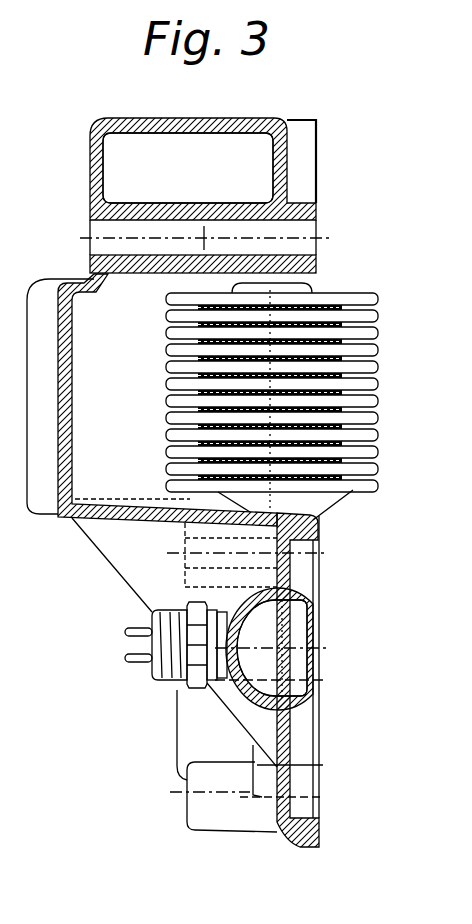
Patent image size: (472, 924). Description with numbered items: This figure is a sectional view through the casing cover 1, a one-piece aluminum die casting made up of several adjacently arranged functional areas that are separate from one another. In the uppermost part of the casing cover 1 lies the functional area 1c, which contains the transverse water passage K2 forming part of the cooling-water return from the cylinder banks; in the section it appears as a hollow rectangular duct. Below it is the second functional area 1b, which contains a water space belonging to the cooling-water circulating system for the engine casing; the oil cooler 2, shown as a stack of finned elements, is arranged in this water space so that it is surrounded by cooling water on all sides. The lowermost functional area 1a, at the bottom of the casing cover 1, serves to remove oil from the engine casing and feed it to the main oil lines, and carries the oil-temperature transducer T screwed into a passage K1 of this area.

The casing cover 1 is at (268, 118).
The lowermost functional area 1a is at (296, 622).
The second functional area 1b is at (145, 396).
The functional area 1c is at (320, 180).
The oil cooler 2 is at (360, 353).
The channel K1 is at (272, 630).
The transverse water passage K2 is at (132, 142).
The oil-temperature transducer T is at (157, 682).